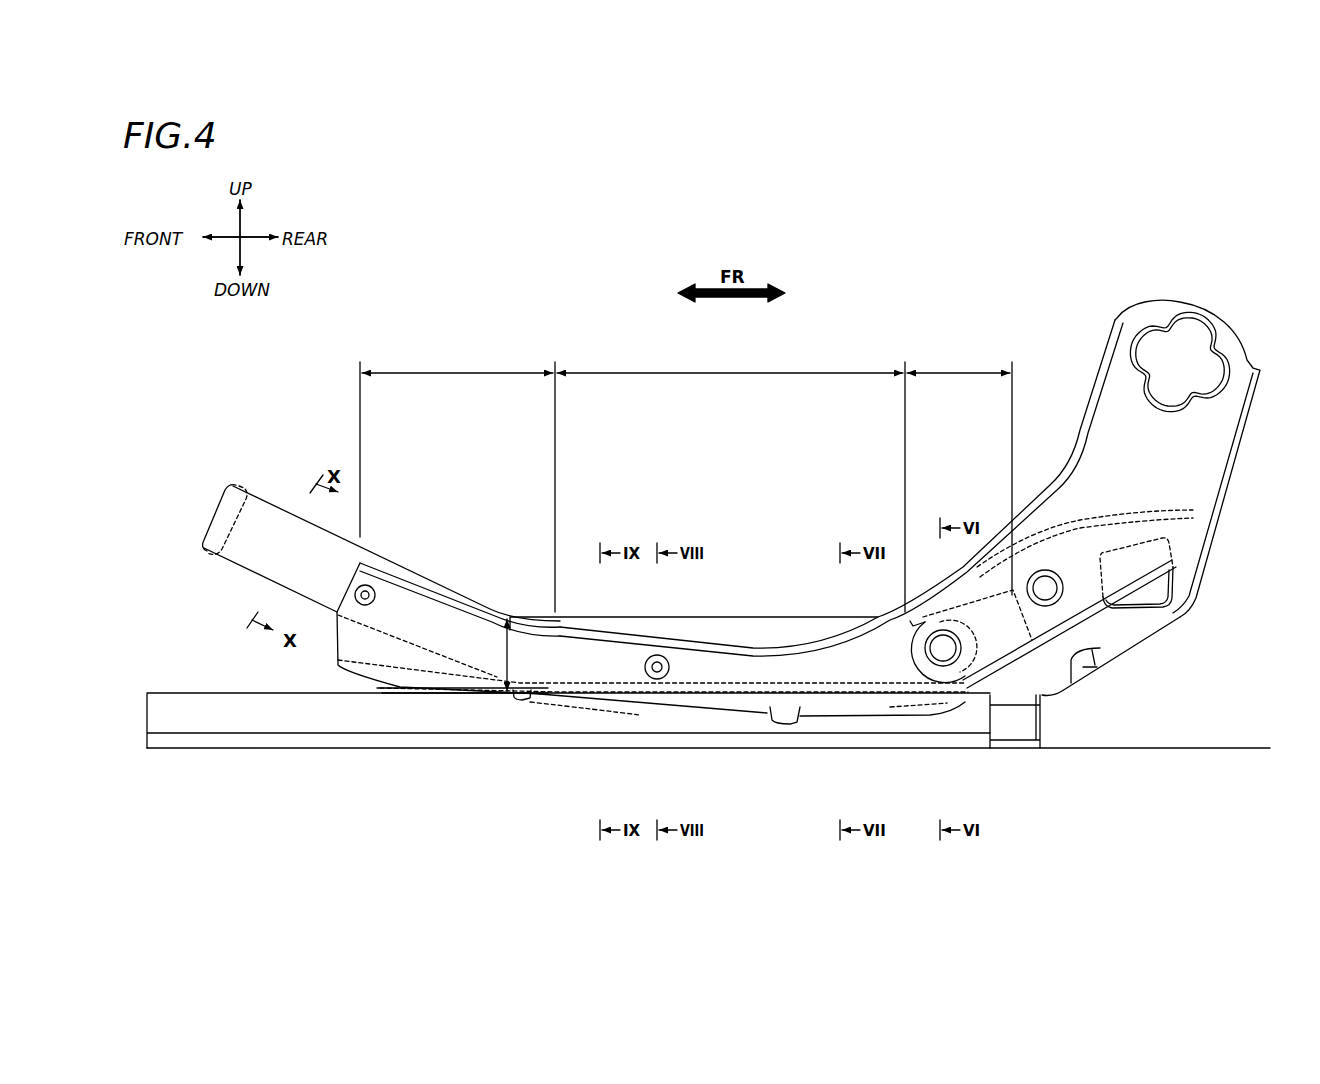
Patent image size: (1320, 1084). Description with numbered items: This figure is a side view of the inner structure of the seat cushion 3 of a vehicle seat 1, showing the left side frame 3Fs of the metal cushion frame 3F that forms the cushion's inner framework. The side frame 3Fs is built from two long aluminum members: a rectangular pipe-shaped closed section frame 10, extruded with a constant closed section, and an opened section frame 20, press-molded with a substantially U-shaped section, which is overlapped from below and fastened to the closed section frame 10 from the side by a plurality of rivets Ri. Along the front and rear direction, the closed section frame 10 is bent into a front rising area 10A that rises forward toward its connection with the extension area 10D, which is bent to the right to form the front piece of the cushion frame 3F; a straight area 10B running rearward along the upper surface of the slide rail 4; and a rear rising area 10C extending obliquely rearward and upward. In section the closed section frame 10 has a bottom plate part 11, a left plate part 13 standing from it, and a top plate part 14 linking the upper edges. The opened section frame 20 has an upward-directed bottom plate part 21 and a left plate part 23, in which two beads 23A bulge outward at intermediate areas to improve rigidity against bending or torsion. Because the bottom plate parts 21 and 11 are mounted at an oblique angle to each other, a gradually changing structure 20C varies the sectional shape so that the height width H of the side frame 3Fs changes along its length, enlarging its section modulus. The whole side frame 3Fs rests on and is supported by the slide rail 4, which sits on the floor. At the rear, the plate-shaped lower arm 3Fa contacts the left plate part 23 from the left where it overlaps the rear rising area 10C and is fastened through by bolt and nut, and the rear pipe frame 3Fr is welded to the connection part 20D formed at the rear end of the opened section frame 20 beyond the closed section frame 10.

The vehicle seat 1 is at (720, 520).
The seat cushion 3 is at (529, 290).
The cushion frame 3F is at (366, 531).
The lower arm 3Fa is at (1170, 470).
The rear pipe frame 3Fr is at (1180, 577).
The side frame 3Fs is at (513, 515).
The closed section frame 10 is at (433, 584).
The front rising area 10A is at (475, 368).
The straight area 10B is at (747, 368).
The rear rising area 10C is at (976, 368).
The extension area 10D is at (207, 512).
The opened section frame 20 is at (653, 604).
The gradually changing structure 20C is at (674, 690).
The connection part 20D is at (1133, 634).
The bottom plate part 11 is at (713, 688).
The left plate part 13 is at (738, 637).
The top plate part 14 is at (802, 616).
The bottom plate part 21 is at (647, 702).
The left plate part 23 is at (868, 672).
The beads 23A is at (545, 673).
The slide rail 4 is at (211, 688).
The vehicle floor F is at (1213, 746).
The rivets Ri is at (366, 585).
The height width H is at (497, 655).